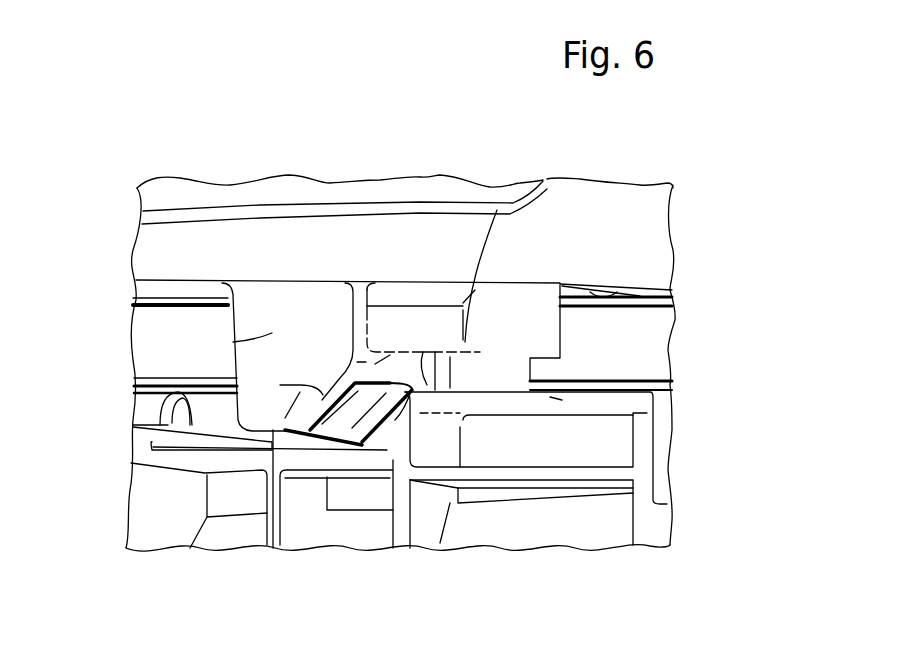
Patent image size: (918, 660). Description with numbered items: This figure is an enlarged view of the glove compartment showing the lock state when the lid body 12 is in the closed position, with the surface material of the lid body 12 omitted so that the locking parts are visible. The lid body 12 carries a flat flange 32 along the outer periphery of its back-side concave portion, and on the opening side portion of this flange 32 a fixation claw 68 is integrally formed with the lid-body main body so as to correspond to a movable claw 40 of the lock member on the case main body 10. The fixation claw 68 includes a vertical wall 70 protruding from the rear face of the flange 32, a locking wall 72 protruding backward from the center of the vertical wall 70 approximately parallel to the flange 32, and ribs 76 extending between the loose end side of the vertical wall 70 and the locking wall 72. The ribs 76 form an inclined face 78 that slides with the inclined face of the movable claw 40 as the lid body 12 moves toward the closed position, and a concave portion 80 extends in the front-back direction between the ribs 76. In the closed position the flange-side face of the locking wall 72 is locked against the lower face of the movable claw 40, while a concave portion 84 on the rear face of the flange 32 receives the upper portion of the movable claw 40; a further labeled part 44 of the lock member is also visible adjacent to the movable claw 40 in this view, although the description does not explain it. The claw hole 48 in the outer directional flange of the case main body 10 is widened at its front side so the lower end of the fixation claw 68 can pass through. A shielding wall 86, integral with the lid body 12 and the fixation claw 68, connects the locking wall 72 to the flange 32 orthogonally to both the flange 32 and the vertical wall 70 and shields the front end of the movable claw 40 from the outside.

The case main body 10 is at (552, 553).
The lid body 12 is at (603, 173).
The flange 32 is at (150, 292).
The movable claw 40 is at (520, 322).
The cover panel 44 is at (437, 297).
The claw hole 48 is at (381, 452).
The fixation claw 68 is at (272, 333).
The vertical wall 70 is at (237, 391).
The locking wall 72 is at (392, 407).
The ribs 76 is at (360, 422).
The inclined face 78 is at (373, 373).
The concave portion 80 is at (342, 407).
The concave portion 84 is at (623, 290).
The shielding wall 86 is at (270, 318).